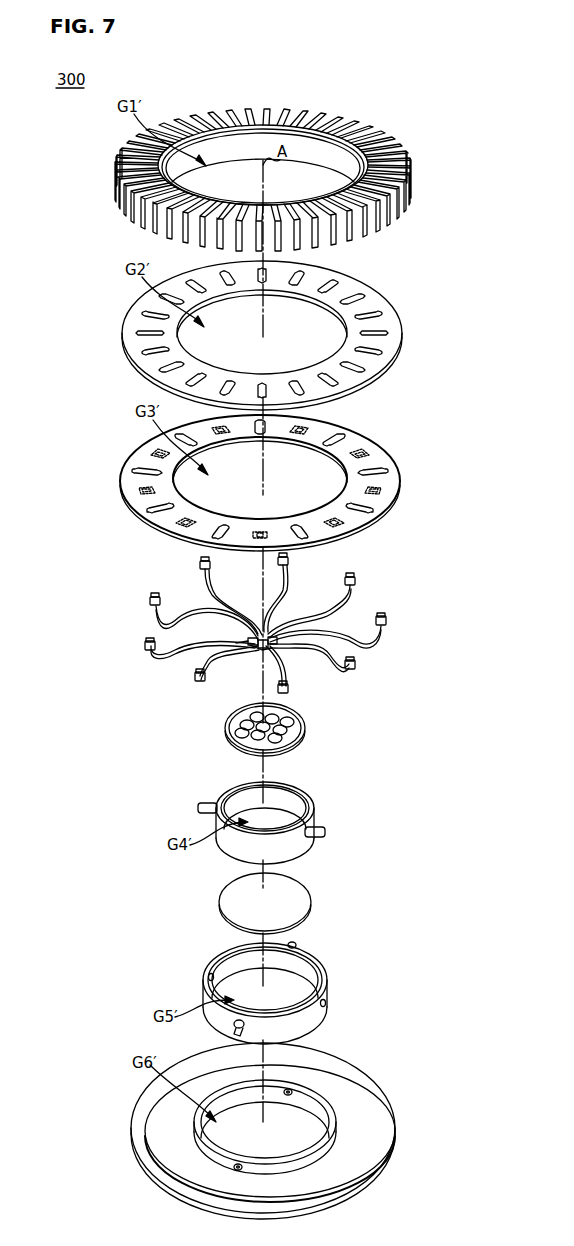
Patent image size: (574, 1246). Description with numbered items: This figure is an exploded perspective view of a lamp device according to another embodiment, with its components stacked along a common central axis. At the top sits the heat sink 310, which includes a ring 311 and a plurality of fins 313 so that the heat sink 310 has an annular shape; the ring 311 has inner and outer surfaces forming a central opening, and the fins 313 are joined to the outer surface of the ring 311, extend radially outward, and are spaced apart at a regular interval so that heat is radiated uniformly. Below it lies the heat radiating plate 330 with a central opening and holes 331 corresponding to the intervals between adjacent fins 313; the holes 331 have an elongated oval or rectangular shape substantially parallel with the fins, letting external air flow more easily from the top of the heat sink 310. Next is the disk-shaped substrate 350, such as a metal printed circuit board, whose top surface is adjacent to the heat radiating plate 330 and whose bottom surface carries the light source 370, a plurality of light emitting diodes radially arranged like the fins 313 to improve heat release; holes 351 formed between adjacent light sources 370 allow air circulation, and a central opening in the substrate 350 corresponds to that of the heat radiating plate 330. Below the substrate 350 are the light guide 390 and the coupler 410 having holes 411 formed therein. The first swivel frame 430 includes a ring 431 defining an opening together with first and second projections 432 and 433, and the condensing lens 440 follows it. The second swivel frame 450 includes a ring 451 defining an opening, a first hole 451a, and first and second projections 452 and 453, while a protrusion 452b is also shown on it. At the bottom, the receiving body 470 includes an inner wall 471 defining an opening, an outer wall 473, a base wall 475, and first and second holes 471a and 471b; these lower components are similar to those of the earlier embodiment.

The heat sink 310 is at (295, 180).
The ring 311 is at (372, 138).
The fins 313 is at (407, 172).
The heat radiating plate 330 is at (286, 335).
The holes 331 is at (374, 305).
The substrate 350 is at (296, 473).
The holes 351 is at (387, 473).
The light source 370 is at (370, 452).
The light guide 390 is at (347, 611).
The coupler 410 is at (292, 723).
The holes 411 is at (285, 731).
The first swivel frame 430 is at (304, 815).
The ring 431 is at (298, 801).
The first projection 432 is at (286, 820).
The second projection 433 is at (222, 790).
The condensing lens 440 is at (308, 898).
The second swivel frame 450 is at (316, 989).
The ring 451 is at (327, 985).
The first hole 451a is at (326, 1003).
The first projection 452 is at (296, 945).
The hook protrusion 452b is at (214, 977).
The second projection 453 is at (245, 1027).
The receiving body 470 is at (312, 1131).
The inner wall 471 is at (328, 1108).
The first hole 471a is at (243, 1166).
The second hole 471b is at (292, 1091).
The outer wall 473 is at (388, 1147).
The base wall 475 is at (368, 1123).